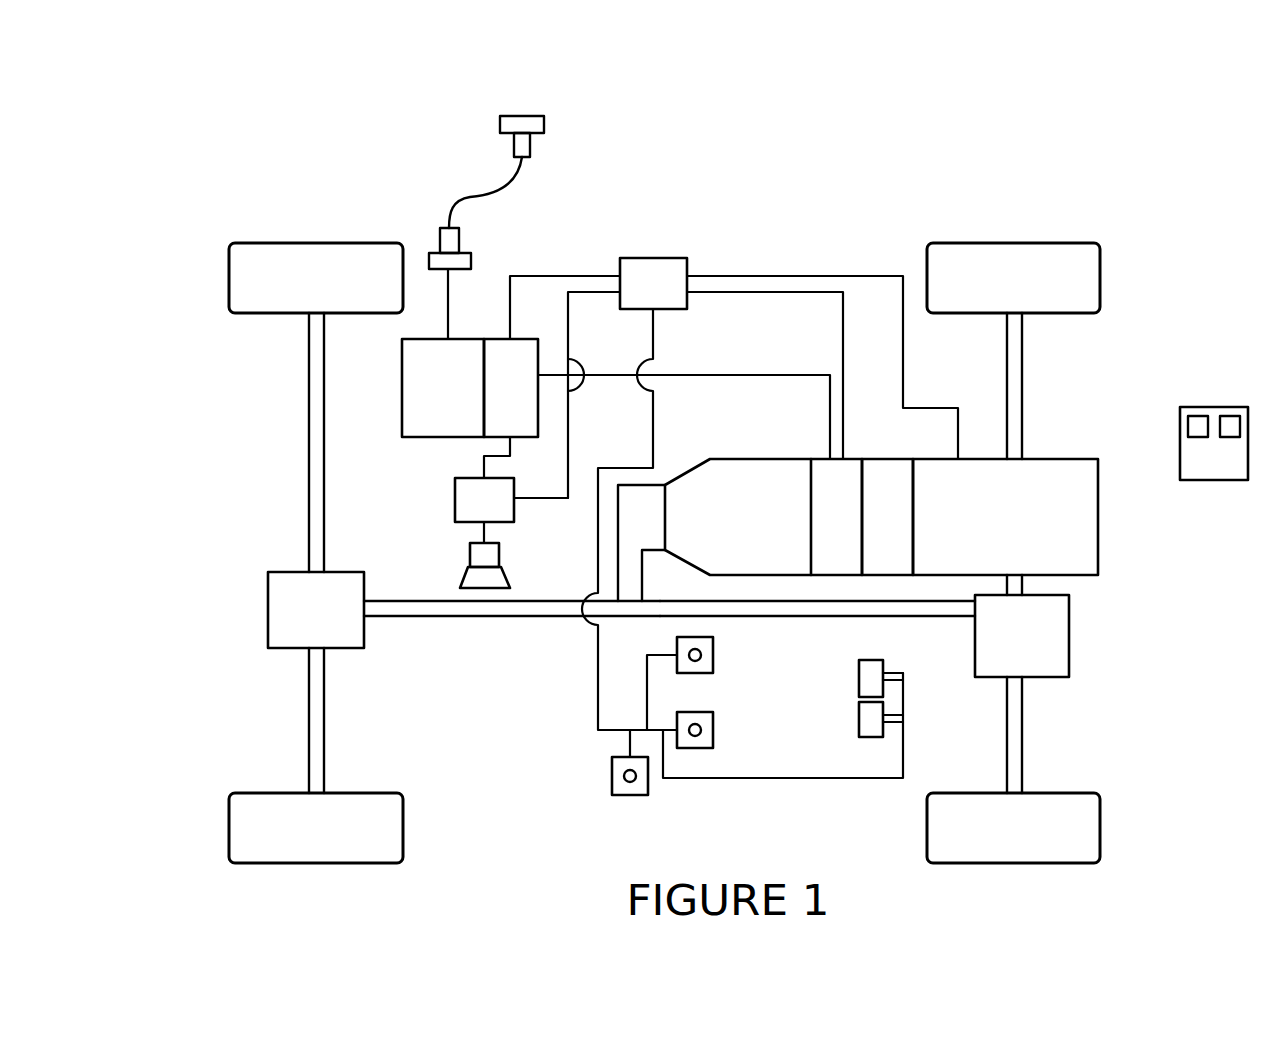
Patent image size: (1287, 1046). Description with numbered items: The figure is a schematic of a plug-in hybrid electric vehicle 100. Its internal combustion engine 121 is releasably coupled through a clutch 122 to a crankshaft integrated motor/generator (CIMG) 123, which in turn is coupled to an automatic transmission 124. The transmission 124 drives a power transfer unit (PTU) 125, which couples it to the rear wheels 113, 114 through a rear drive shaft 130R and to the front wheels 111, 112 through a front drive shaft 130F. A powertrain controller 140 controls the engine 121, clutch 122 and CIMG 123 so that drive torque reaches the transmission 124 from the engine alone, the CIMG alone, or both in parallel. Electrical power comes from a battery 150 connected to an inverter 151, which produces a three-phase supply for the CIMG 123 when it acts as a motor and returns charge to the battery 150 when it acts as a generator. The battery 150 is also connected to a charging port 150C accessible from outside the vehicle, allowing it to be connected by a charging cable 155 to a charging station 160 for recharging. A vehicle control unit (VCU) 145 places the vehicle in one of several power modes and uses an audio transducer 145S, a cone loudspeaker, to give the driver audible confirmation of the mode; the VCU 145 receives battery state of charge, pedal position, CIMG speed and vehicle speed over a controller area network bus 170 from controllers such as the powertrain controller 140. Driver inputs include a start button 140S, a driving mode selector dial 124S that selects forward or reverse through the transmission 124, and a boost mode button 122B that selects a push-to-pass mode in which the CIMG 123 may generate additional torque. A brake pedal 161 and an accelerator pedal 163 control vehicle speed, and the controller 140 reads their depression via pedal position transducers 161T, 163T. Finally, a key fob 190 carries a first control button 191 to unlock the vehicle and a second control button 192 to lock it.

The vehicle 100 is at (1118, 202).
The front wheel 111 is at (1018, 258).
The front wheel 112 is at (1073, 807).
The rear wheel 113 is at (251, 258).
The rear wheel 114 is at (251, 808).
The internal combustion engine 121 is at (987, 528).
The clutch 122 is at (870, 528).
The crankshaft integrated motor/generator (CIMG) 123 is at (819, 528).
The automatic transmission 124 is at (742, 528).
The power transfer unit (PTU) 125 is at (632, 568).
The rear drive shaft 130R is at (465, 608).
The front drive shaft 130F is at (862, 612).
The powertrain controller 140 is at (635, 297).
The start button 140S is at (700, 732).
The vehicle control unit (VCU) 145 is at (467, 511).
The audio transducer 145S is at (468, 553).
The battery 150 is at (425, 402).
The charging port 150C is at (472, 258).
The inverter 151 is at (493, 402).
The charging cable 155 is at (503, 190).
The charging station 160 is at (544, 124).
The brake pedal 161 is at (872, 678).
The pedal position transducer 161T is at (903, 678).
The accelerator pedal 163 is at (872, 725).
The pedal position transducer 163T is at (903, 720).
The controller area network (CAN) bus 170 is at (580, 276).
The key fob 190 is at (1213, 388).
The first control button 191 is at (1195, 428).
The second control button 192 is at (1227, 437).
The driving mode selector dial 124S is at (700, 654).
The boost mode button 122B is at (626, 780).